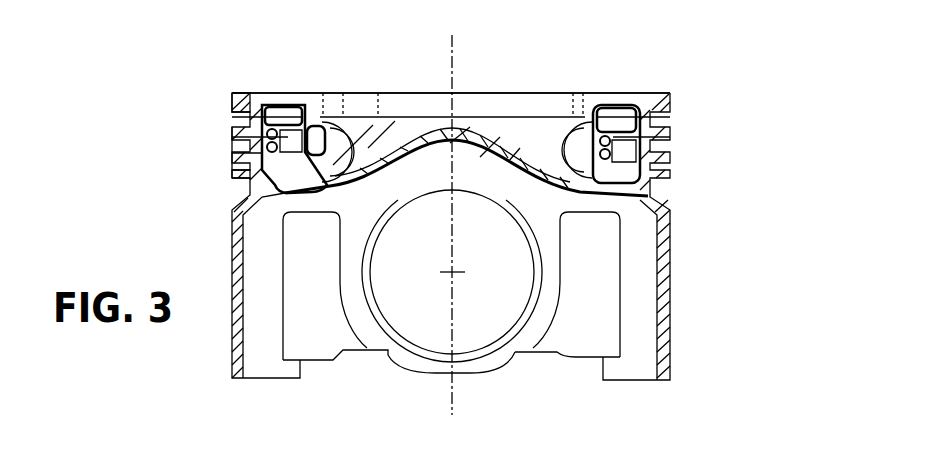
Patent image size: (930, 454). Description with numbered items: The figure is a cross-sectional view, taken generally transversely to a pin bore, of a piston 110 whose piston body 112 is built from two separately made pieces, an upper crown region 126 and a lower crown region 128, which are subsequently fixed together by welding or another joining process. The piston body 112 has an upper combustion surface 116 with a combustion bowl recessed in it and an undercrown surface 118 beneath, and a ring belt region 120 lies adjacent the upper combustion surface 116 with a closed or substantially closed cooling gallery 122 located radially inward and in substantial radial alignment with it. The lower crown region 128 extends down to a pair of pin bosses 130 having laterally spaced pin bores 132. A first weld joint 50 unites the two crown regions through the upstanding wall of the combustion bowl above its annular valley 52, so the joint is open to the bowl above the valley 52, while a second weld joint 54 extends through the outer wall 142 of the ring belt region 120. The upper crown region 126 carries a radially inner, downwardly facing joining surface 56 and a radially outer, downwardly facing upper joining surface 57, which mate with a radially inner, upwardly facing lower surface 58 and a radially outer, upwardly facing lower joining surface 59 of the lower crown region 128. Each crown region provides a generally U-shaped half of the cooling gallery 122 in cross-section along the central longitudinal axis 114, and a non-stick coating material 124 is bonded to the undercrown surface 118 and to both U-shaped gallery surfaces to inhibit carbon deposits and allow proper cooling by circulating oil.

The piston 110 is at (712, 70).
The piston body 112 is at (653, 97).
The central longitudinal axis 114 is at (445, 398).
The upper combustion surface 116 is at (507, 127).
The undercrown surface 118 is at (427, 117).
The ring belt region 120 is at (172, 93).
The cooling gallery 122 is at (617, 110).
The non-stick coating material 124 is at (480, 160).
The upper crown region 126 is at (688, 92).
The lower crown region 128 is at (688, 143).
The pin bosses 130 is at (500, 360).
The pin bores 132 is at (388, 322).
The outer wall 142 is at (232, 98).
The first weld joint 50 is at (262, 190).
The annular valley 52 is at (350, 155).
The second weld joint 54 is at (262, 118).
The radially inner, downwardly facing joining surface 56 is at (303, 193).
The radially outer, downwardly facing upper joining surface 57 is at (246, 148).
The radially inner, upwardly facing lower surface 58 is at (309, 112).
The radially outer, upwardly facing lower joining surface 59 is at (256, 118).